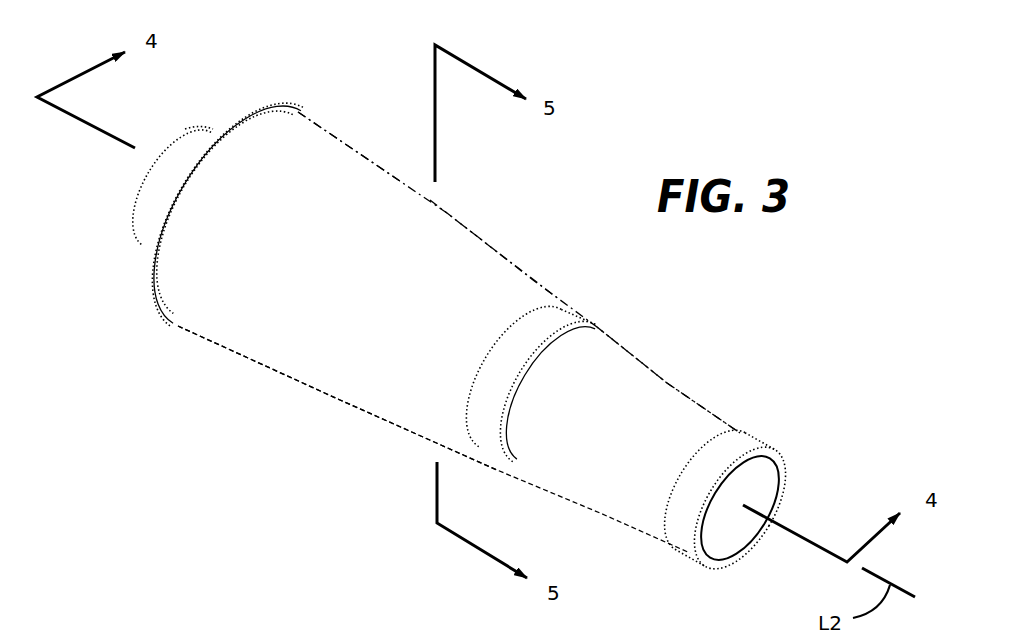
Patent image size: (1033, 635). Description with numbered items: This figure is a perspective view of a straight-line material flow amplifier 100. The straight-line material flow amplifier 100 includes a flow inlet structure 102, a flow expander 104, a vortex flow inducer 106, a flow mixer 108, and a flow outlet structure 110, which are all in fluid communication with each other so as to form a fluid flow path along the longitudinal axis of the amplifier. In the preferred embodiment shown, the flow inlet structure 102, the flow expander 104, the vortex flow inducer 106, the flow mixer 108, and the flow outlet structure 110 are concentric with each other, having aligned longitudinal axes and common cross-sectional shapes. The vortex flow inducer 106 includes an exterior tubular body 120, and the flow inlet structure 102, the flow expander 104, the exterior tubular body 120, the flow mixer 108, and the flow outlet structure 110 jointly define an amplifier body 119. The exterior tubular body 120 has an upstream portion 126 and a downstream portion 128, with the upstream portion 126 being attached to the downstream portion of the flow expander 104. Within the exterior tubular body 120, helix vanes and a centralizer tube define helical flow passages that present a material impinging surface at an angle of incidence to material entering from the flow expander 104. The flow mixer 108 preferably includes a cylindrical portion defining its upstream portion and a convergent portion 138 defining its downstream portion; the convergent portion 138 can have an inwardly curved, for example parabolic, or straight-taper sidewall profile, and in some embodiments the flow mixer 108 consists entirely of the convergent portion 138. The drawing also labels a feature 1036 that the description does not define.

The straight-line material flow amplifier 100 is at (748, 304).
The flow inlet structure 102 is at (193, 133).
The flow expander 104 is at (238, 117).
The vortex flow inducer 106 is at (500, 270).
The flow mixer 108 is at (582, 358).
The flow outlet structure 110 is at (725, 448).
The amplifier body 119 is at (312, 329).
The exterior tubular body 120 is at (447, 237).
The upstream portion 126 is at (313, 127).
The downstream portion 128 is at (547, 297).
The collar 1036 is at (542, 323).
The convergent portion 138 is at (660, 413).